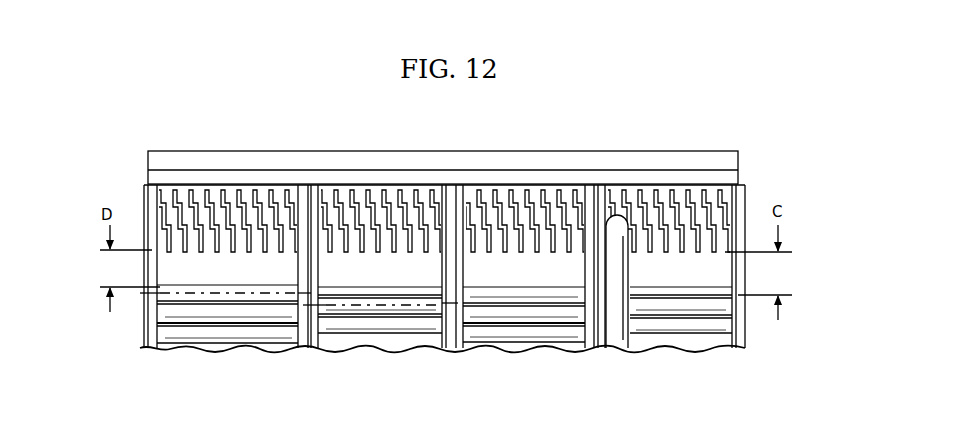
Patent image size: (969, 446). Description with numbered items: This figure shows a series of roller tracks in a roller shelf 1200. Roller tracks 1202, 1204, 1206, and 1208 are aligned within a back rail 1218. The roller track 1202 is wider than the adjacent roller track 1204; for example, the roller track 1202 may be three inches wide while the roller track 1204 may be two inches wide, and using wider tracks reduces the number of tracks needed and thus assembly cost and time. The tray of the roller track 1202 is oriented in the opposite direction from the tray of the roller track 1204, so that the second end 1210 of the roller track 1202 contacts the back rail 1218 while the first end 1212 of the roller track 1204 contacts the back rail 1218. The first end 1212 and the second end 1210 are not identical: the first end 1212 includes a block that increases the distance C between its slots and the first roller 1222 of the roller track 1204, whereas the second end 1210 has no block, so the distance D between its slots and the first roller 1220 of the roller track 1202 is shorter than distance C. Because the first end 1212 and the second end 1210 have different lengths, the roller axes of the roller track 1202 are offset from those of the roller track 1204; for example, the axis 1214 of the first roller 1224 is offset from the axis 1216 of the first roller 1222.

The roller shelf 1200 is at (158, 115).
The roller track 1202 is at (227, 144).
The roller track 1204 is at (380, 144).
The roller track 1206 is at (525, 144).
The roller track 1208 is at (669, 144).
The second end 1210 is at (251, 279).
The first end 1212 is at (403, 279).
The axis 1214 is at (228, 295).
The axis 1216 is at (382, 307).
The back rail 1218 is at (147, 163).
The first roller 1220 is at (433, 283).
The first roller 1222 is at (157, 295).
The first roller 1224 is at (407, 312).